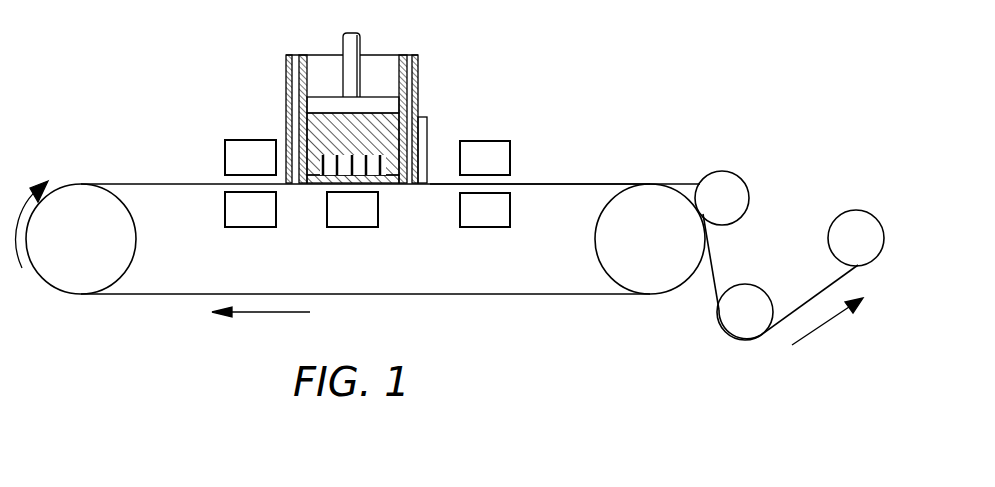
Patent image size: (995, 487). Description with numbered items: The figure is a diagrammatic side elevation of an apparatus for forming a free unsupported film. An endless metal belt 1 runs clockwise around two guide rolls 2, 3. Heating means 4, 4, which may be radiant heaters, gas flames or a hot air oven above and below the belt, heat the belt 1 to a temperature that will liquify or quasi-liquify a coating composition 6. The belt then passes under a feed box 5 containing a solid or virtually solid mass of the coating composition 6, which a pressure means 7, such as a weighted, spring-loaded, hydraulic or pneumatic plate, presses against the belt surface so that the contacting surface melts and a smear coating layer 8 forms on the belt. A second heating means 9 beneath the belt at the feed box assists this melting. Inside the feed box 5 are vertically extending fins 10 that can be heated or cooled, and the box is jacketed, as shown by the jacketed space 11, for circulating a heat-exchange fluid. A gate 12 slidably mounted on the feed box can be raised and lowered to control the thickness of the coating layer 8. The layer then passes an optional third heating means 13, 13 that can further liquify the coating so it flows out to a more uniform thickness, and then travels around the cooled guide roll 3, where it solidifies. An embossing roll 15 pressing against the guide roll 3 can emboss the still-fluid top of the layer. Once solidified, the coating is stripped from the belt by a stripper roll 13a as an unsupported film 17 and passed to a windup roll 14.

The endless metal belt 1 is at (362, 294).
The guide roll 2 is at (76, 237).
The guide roll 3 is at (650, 239).
The heating means 4 is at (250, 183).
The feed box 5 is at (342, 101).
The coating composition 6 is at (366, 125).
The pressure means 7 is at (343, 43).
The coating layer 8 is at (571, 184).
The second heating means 9 is at (352, 209).
The fins 10 is at (325, 144).
The jacketed space 11 is at (303, 100).
The gate 12 is at (424, 133).
The third heating means 13 is at (485, 184).
The stripper roll 13a is at (745, 312).
The windup roll 14 is at (856, 238).
The embossing roll 15 is at (722, 198).
The unsupported film 17 is at (808, 298).